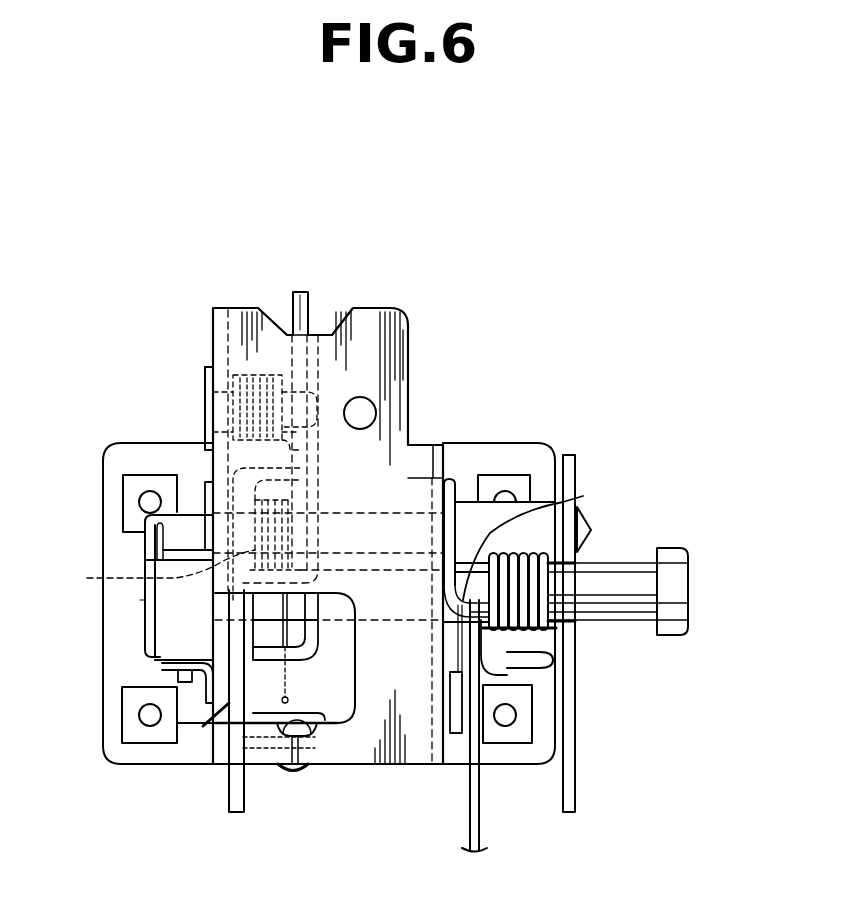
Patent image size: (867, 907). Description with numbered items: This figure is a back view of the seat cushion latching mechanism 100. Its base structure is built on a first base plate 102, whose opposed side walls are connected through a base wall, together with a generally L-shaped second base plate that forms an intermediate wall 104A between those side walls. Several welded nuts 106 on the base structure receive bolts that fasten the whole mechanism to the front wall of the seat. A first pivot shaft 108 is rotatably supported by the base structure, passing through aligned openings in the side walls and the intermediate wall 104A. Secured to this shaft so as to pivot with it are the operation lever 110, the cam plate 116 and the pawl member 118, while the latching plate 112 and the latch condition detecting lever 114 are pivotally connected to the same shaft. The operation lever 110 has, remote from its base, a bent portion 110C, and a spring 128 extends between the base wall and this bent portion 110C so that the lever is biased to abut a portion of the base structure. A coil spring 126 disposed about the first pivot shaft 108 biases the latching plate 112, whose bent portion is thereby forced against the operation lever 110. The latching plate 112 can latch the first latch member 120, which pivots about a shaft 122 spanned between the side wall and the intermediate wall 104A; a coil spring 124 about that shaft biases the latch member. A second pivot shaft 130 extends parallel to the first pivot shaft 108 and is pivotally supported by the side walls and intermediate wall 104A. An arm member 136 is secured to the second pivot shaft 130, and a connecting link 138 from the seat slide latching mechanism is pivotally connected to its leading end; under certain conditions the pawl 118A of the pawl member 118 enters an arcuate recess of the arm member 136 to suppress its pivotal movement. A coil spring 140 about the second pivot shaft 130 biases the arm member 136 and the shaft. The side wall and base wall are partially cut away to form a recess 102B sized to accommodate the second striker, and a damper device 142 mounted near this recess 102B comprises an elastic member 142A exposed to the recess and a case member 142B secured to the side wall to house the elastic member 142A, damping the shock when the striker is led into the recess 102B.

The seat cushion latching mechanism 100 is at (497, 268).
The first base plate 102 is at (387, 307).
The opening or recess 102B is at (205, 723).
The intermediate wall 104A is at (312, 307).
The welded nuts 106 is at (133, 480).
The first pivot shaft 108 is at (582, 520).
The operation lever 110 is at (237, 812).
The bent portion 110C is at (310, 753).
The latching plate 112 is at (337, 740).
The latch condition detecting lever 114 is at (247, 728).
The cam plate 116 is at (575, 722).
The pawl member 118 is at (448, 480).
The pawl 118A is at (583, 496).
The first latch member 120 is at (292, 296).
The shaft 122 is at (205, 385).
The coil spring 124 is at (258, 370).
The coil spring 126 is at (165, 534).
The spring 128 is at (272, 768).
The second pivot shaft 130 is at (680, 593).
The arm member 136 is at (462, 740).
The connecting link 138 is at (480, 832).
The coil spring 140 is at (555, 640).
The damper device 142 is at (140, 600).
The elastic member 142A is at (173, 625).
The case member 142B is at (163, 667).